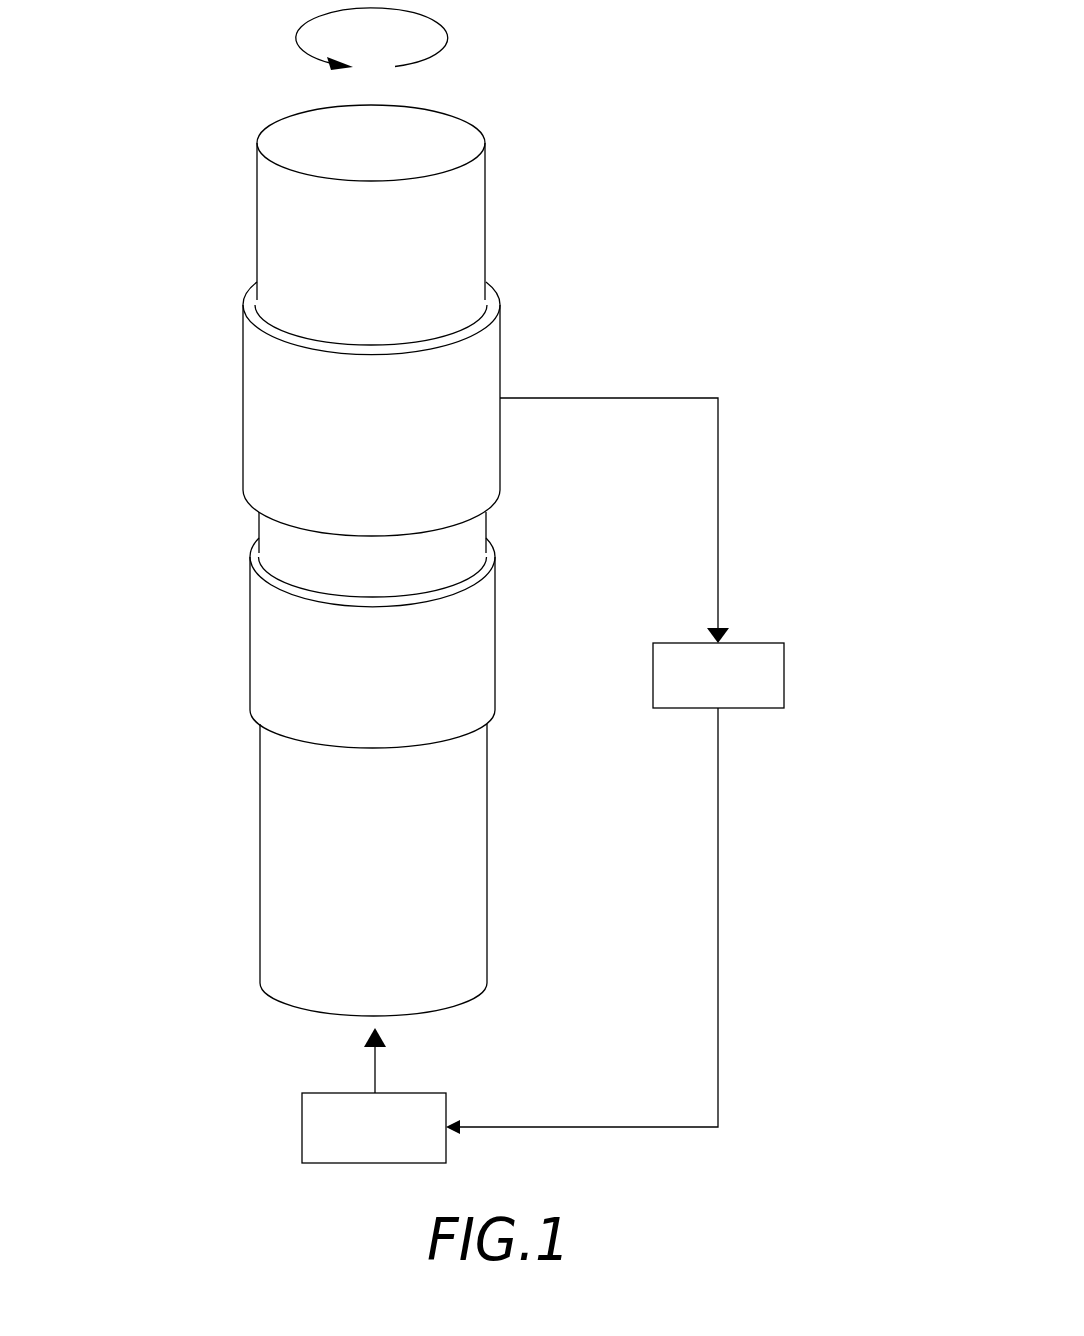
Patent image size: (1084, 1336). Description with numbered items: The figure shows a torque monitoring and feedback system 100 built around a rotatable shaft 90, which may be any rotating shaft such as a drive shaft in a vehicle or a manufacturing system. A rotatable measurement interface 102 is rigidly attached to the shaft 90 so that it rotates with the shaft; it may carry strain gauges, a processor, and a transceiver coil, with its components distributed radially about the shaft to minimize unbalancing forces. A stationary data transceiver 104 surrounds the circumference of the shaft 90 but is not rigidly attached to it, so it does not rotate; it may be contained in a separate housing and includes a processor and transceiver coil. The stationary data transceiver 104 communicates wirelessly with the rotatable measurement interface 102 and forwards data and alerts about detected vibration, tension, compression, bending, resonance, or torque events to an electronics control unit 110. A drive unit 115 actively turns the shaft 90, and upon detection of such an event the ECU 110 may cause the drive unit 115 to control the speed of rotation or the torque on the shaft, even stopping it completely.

The torque monitoring and feedback system 100 is at (597, 80).
The rotatable shaft 90 is at (485, 248).
The stationary data transceiver 104 is at (243, 413).
The rotatable measurement interface 102 is at (250, 658).
The electronics control unit (ECU) 110 is at (784, 668).
The drive unit 115 is at (302, 1128).